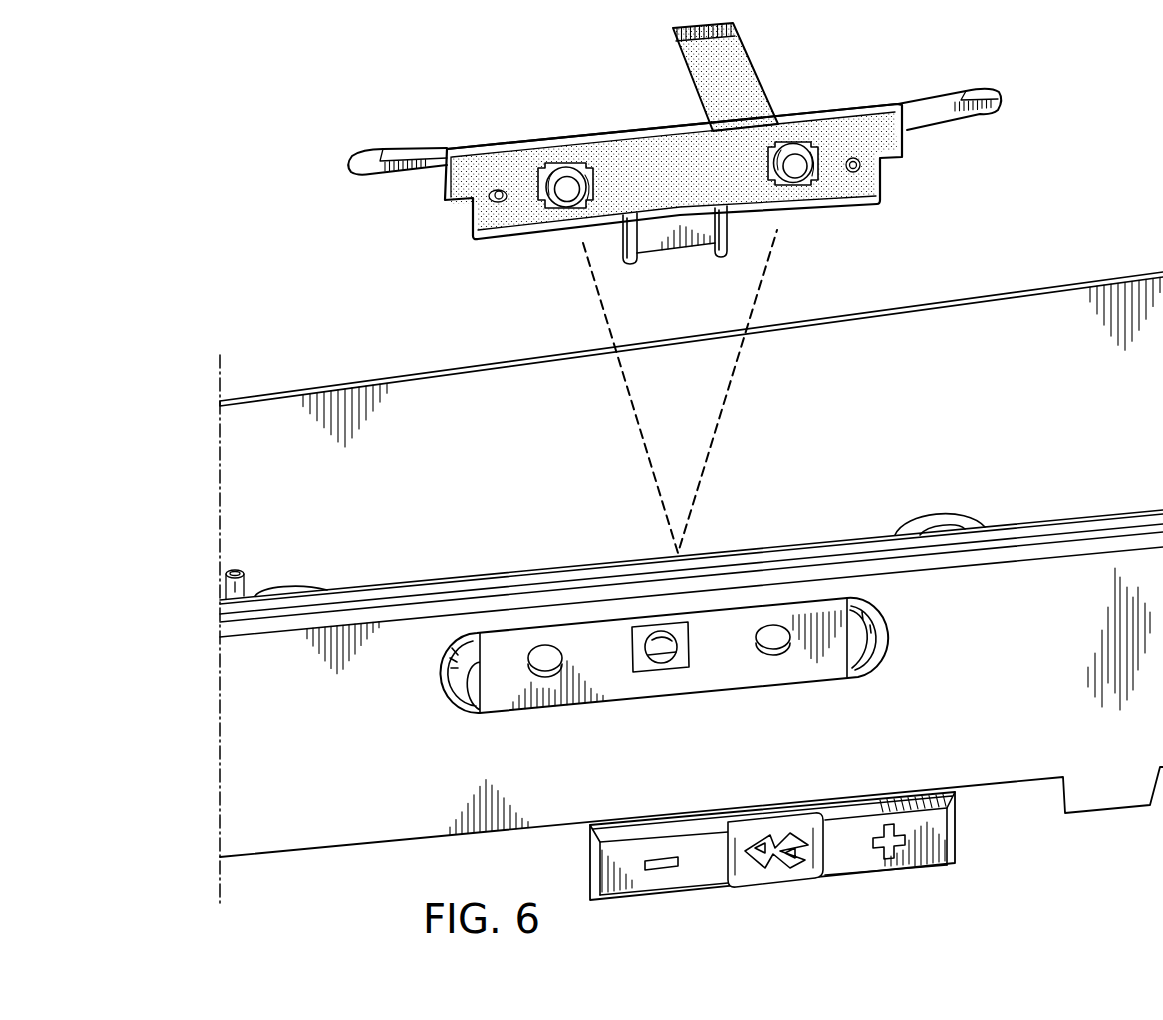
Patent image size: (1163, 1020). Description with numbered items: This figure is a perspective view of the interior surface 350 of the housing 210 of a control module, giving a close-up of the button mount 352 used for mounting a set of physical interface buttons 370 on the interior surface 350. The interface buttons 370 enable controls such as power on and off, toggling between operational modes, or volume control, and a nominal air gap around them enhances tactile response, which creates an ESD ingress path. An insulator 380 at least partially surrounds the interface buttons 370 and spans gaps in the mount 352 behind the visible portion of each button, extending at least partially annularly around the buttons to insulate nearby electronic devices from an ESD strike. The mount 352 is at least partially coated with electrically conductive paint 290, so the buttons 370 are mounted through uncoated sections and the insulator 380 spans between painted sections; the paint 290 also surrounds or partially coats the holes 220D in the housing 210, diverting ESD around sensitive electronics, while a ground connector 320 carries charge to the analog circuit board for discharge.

The housing 210 is at (272, 371).
The hole 220D is at (538, 684).
The electrically conductive paint 290 is at (709, 189).
The ground connector 320 is at (752, 101).
The inner surface 350 is at (911, 447).
The button mount 352 is at (378, 125).
The interface button 370 is at (543, 128).
The insulator 380 is at (557, 220).